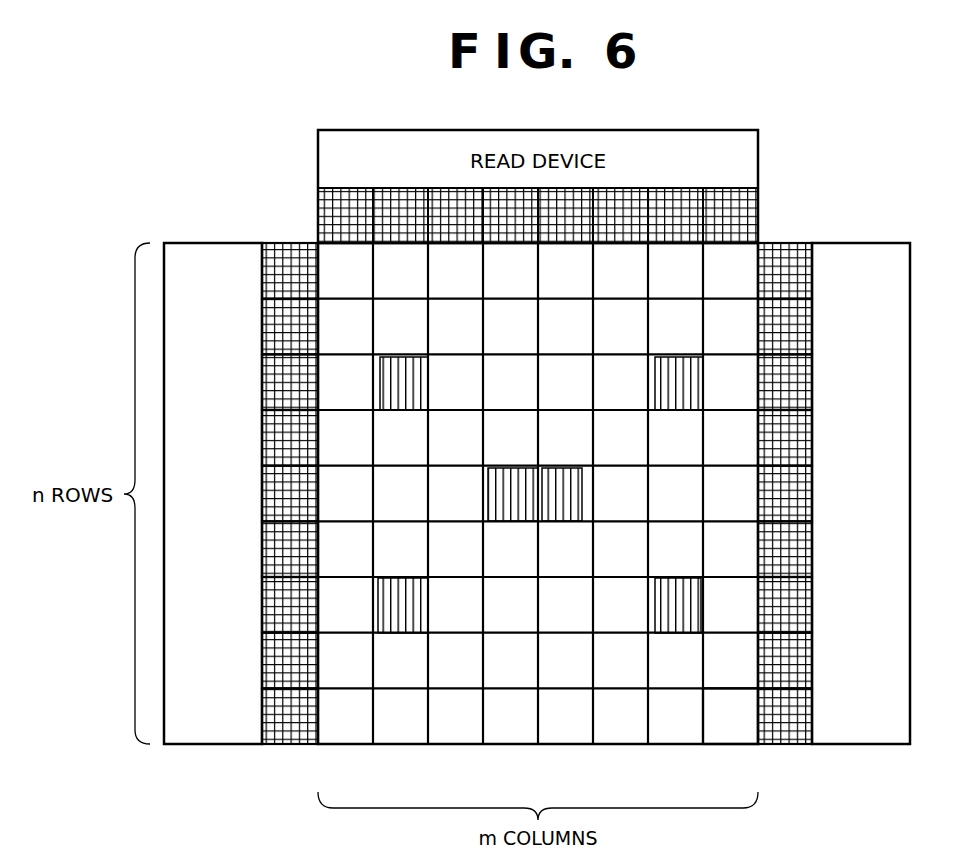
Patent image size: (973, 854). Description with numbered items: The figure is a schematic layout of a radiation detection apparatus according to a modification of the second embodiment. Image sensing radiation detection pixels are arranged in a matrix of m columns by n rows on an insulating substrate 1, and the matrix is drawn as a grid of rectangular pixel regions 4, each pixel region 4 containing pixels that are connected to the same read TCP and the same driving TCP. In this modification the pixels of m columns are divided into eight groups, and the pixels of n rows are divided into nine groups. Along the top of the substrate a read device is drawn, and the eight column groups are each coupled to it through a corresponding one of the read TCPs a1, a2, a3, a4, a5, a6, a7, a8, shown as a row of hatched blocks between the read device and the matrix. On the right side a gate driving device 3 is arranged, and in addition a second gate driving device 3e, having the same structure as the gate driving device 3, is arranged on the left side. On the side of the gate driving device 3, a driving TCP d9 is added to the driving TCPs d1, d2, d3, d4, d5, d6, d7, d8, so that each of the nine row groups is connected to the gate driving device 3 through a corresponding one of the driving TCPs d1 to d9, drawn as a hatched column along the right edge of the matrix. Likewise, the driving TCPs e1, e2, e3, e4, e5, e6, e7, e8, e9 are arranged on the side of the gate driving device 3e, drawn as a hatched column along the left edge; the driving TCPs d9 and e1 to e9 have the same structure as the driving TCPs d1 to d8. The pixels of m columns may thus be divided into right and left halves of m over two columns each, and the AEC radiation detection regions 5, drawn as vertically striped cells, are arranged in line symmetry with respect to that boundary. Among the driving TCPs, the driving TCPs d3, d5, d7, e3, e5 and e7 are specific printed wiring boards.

The insulating substrate 1 is at (617, 746).
The gate driving device 3 is at (910, 500).
The gate driving device 3e is at (212, 243).
The pixel region 4 is at (726, 724).
The AEC radiation detection region 5 is at (399, 622).
The read TCP a1 is at (345, 205).
The read TCP a2 is at (401, 205).
The read TCP a3 is at (448, 205).
The read TCP a4 is at (508, 228).
The read TCP a5 is at (565, 228).
The read TCP a6 is at (629, 205).
The read TCP a7 is at (677, 205).
The read TCP a8 is at (727, 205).
The driving TCP e1 is at (302, 268).
The driving TCP e2 is at (302, 324).
The driving TCP e3 is at (302, 381).
The driving TCP e4 is at (302, 437).
The driving TCP e5 is at (302, 494).
The driving TCP e6 is at (302, 550).
The driving TCP e7 is at (302, 606).
The driving TCP e8 is at (302, 663).
The driving TCP e9 is at (302, 719).
The driving TCP d1 is at (798, 268).
The driving TCP d2 is at (798, 325).
The driving TCP d3 is at (798, 375).
The driving TCP d4 is at (798, 427).
The driving TCP d5 is at (770, 500).
The driving TCP d6 is at (798, 558).
The driving TCP d7 is at (798, 613).
The driving TCP d8 is at (798, 672).
The driving TCP d9 is at (798, 722).